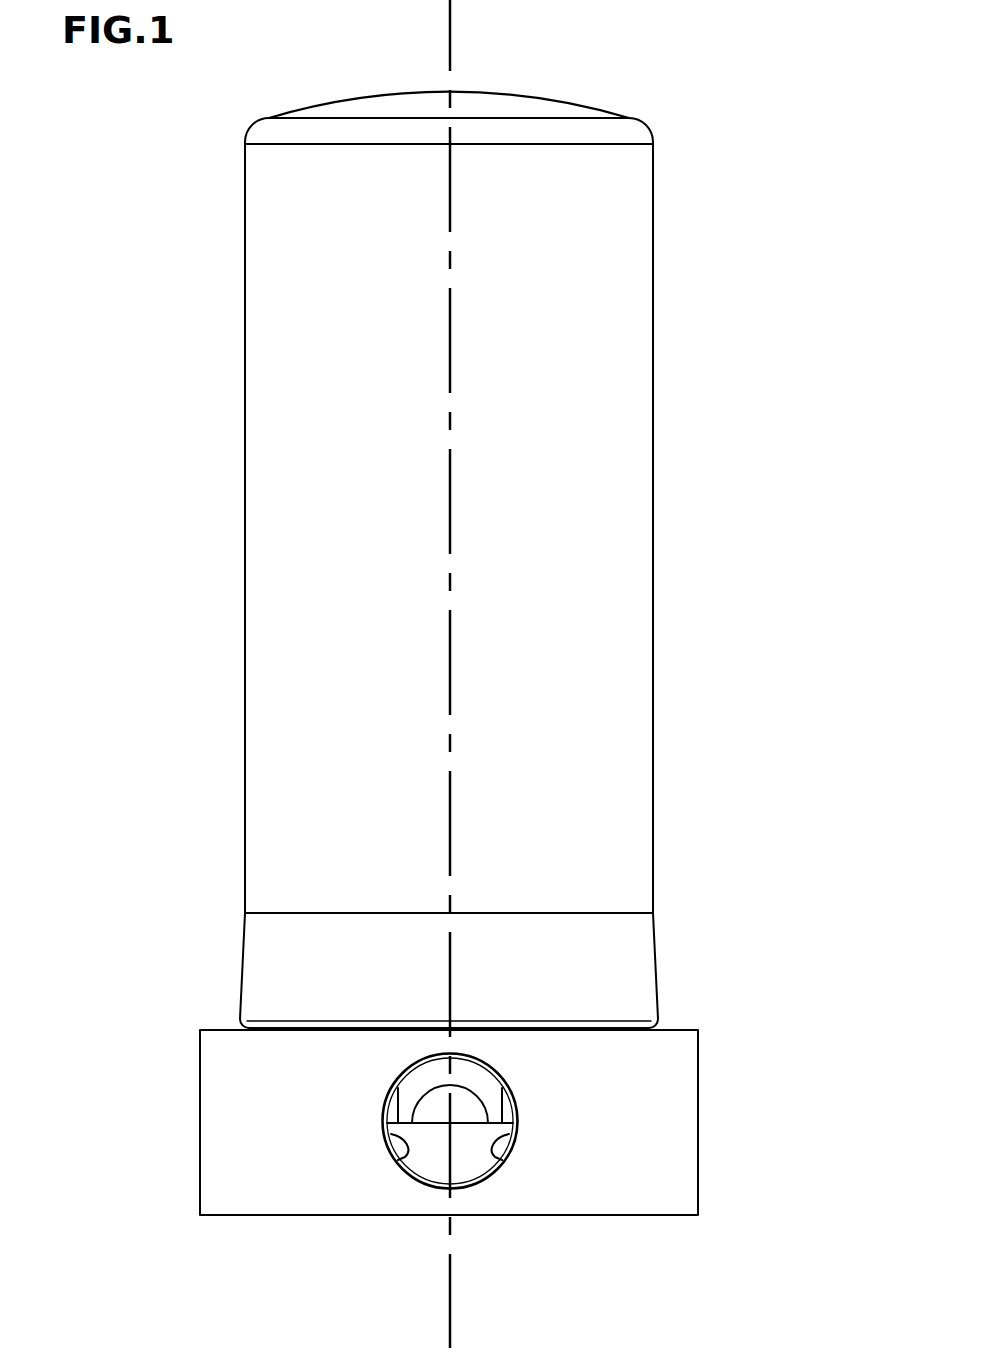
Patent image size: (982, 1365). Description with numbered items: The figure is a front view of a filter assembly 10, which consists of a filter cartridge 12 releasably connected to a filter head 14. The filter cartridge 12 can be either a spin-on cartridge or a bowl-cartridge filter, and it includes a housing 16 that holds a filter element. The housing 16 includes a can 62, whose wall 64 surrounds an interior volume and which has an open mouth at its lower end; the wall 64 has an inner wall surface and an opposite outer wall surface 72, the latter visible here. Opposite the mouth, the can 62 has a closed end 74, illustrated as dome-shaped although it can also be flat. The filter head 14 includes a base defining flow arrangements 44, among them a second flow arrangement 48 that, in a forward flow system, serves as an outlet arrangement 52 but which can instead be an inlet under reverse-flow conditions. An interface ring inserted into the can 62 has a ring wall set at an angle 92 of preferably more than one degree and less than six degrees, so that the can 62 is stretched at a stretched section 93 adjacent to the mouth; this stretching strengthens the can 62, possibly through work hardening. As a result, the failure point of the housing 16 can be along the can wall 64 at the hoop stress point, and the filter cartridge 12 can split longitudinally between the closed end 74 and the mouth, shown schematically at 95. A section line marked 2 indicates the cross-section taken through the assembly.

The section line 2- 2 is at (452, 13).
The filter assembly 10 is at (710, 145).
The filter cartridge 12 is at (210, 500).
The filter head 14 is at (168, 1140).
The housing 16 is at (653, 595).
The flow arrangements 44 is at (513, 1142).
The second flow arrangement 48 is at (387, 1138).
The outlet arrangement 52 is at (390, 1113).
The can 62 is at (244, 355).
The wall 64 is at (653, 460).
The outer wall surface 72 is at (244, 710).
The closed end 74 is at (502, 93).
The angle 92 is at (698, 1122).
The stretched section 93 is at (660, 913).
The longitudinal split 95 is at (450, 487).